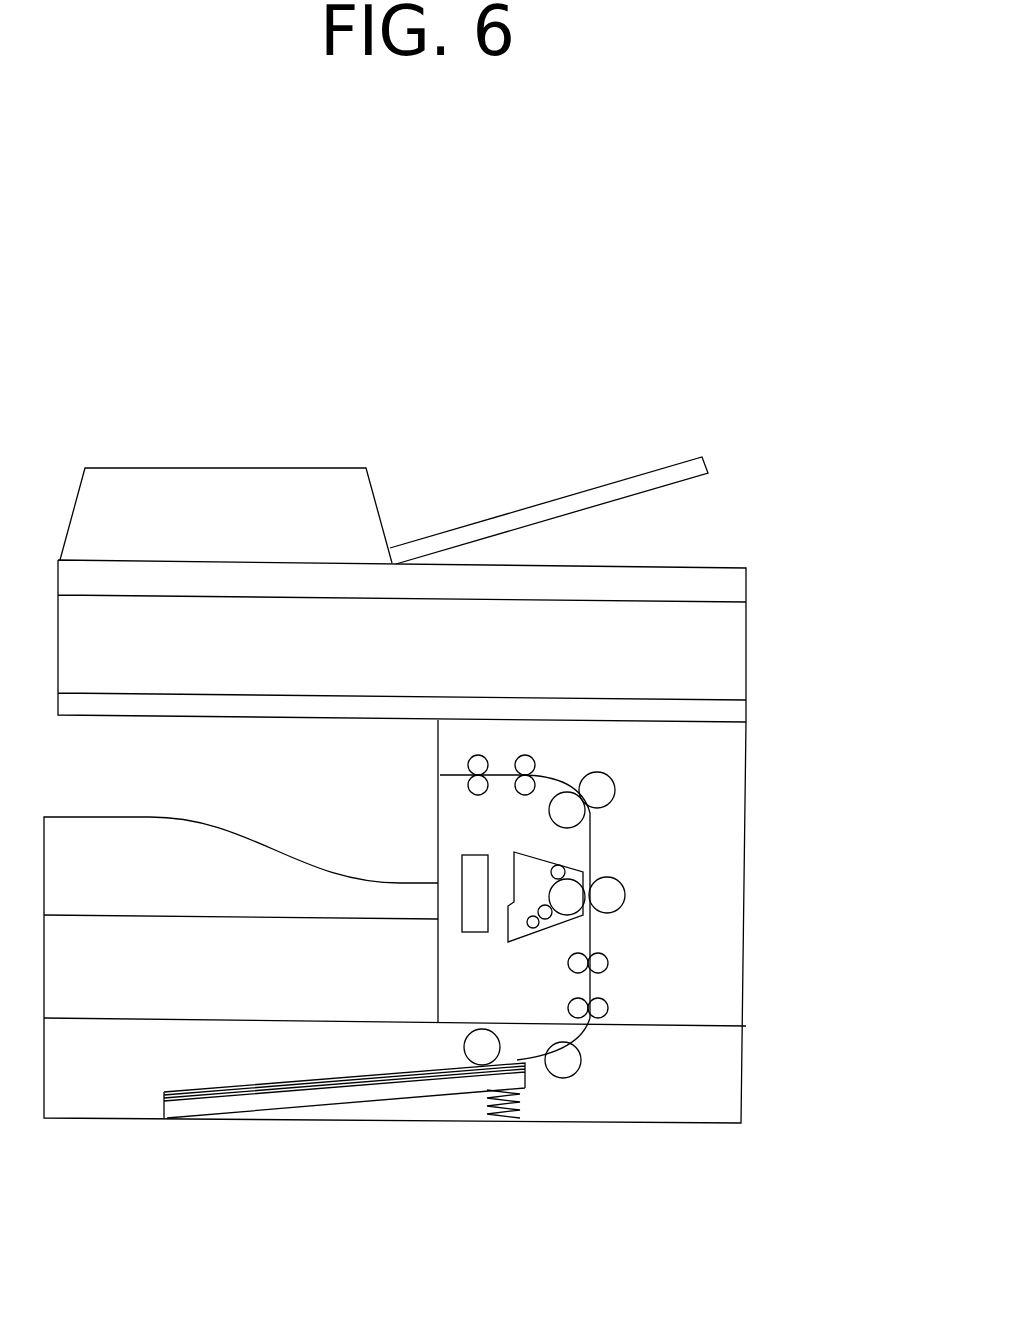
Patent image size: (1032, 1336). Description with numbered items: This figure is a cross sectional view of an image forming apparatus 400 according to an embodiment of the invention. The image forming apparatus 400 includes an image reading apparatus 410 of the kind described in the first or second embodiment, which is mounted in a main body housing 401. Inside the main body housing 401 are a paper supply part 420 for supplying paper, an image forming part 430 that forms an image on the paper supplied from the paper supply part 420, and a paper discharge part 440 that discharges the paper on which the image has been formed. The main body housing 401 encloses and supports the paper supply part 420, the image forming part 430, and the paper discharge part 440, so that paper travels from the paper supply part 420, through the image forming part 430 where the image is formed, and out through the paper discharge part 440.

The image forming apparatus 400 is at (582, 347).
The main body housing 401 is at (746, 856).
The image reading apparatus 410 is at (732, 535).
The paper supply part 420 is at (585, 1078).
The image forming part 430 is at (603, 917).
The paper discharge part 440 is at (445, 779).